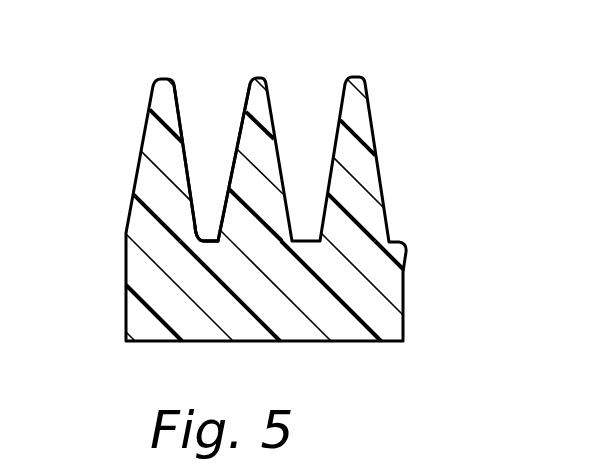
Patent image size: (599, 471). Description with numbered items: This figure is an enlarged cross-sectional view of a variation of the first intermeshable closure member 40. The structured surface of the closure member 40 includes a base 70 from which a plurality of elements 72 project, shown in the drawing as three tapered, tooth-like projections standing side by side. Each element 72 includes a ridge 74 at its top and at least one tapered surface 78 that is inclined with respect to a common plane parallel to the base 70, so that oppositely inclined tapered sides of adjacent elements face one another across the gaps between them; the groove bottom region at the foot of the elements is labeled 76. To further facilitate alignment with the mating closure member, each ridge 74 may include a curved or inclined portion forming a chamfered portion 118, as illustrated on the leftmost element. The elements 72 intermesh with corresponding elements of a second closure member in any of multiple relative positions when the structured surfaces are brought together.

The first intermeshable closure member 40 is at (118, 302).
The base 70 is at (394, 298).
The element 72 is at (361, 160).
The ridge 74 is at (257, 78).
The chamfered portion 118 is at (175, 81).
The tapered surface 78 is at (233, 168).
The groove bottom 76 is at (201, 240).